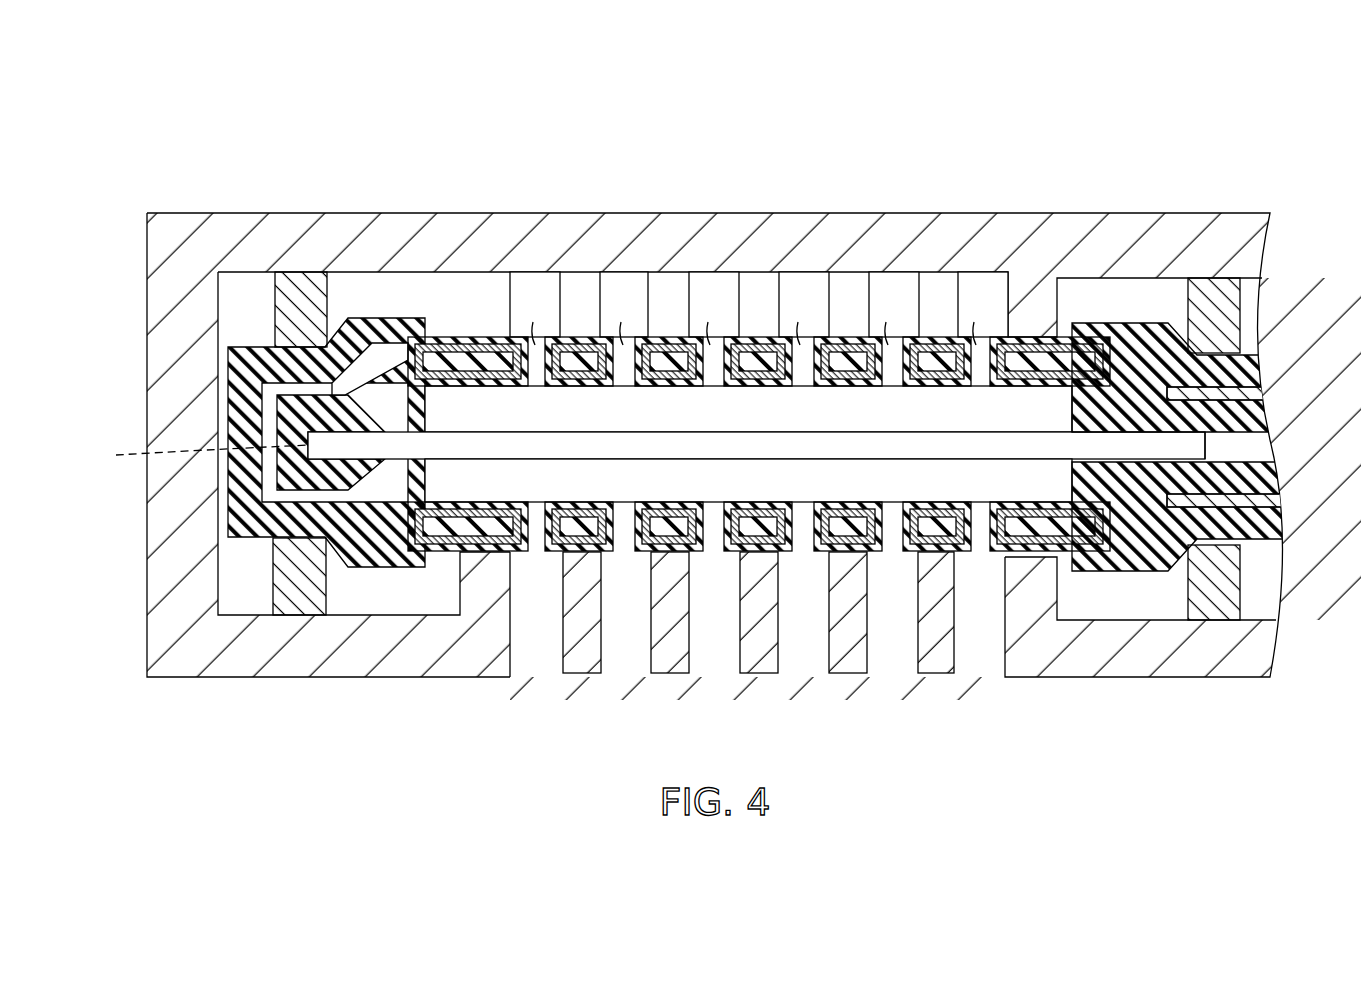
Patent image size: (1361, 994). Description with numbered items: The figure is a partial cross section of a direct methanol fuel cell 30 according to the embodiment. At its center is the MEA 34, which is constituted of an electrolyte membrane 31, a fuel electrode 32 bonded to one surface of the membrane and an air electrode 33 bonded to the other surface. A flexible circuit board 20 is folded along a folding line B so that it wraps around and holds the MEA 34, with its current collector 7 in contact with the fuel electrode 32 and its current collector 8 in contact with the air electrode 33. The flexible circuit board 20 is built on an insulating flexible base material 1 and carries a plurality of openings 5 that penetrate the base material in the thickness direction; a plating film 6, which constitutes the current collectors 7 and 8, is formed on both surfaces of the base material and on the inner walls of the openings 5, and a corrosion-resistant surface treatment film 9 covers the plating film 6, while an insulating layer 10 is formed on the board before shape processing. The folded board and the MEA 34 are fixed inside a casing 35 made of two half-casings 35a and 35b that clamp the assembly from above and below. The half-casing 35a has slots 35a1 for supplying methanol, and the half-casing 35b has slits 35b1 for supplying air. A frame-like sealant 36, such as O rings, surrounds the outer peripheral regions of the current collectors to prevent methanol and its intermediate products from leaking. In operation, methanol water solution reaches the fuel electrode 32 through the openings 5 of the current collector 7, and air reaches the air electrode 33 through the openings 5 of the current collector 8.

The fuel cell 30 is at (1242, 141).
The casing 35 is at (807, 213).
The half-casing 35a is at (160, 338).
The half-casing 35b is at (160, 550).
The slots 35a1 is at (519, 272).
The slits 35b1 is at (764, 655).
The sealant 36 is at (1214, 300).
The current collector 7 is at (446, 337).
The openings 5 is at (976, 580).
The surface treatment film 9 is at (926, 345).
The insulating layer 10 is at (1252, 368).
The flexible base material 1 is at (1255, 395).
The MEA 34 is at (1212, 447).
The electrolyte membrane 31 is at (720, 457).
The fuel electrode 32 is at (720, 419).
The air electrode 33 is at (720, 495).
The flexible circuit board 20 is at (379, 572).
The current collector 8 is at (438, 556).
The plating film 6 is at (666, 560).
The folding line B is at (202, 455).